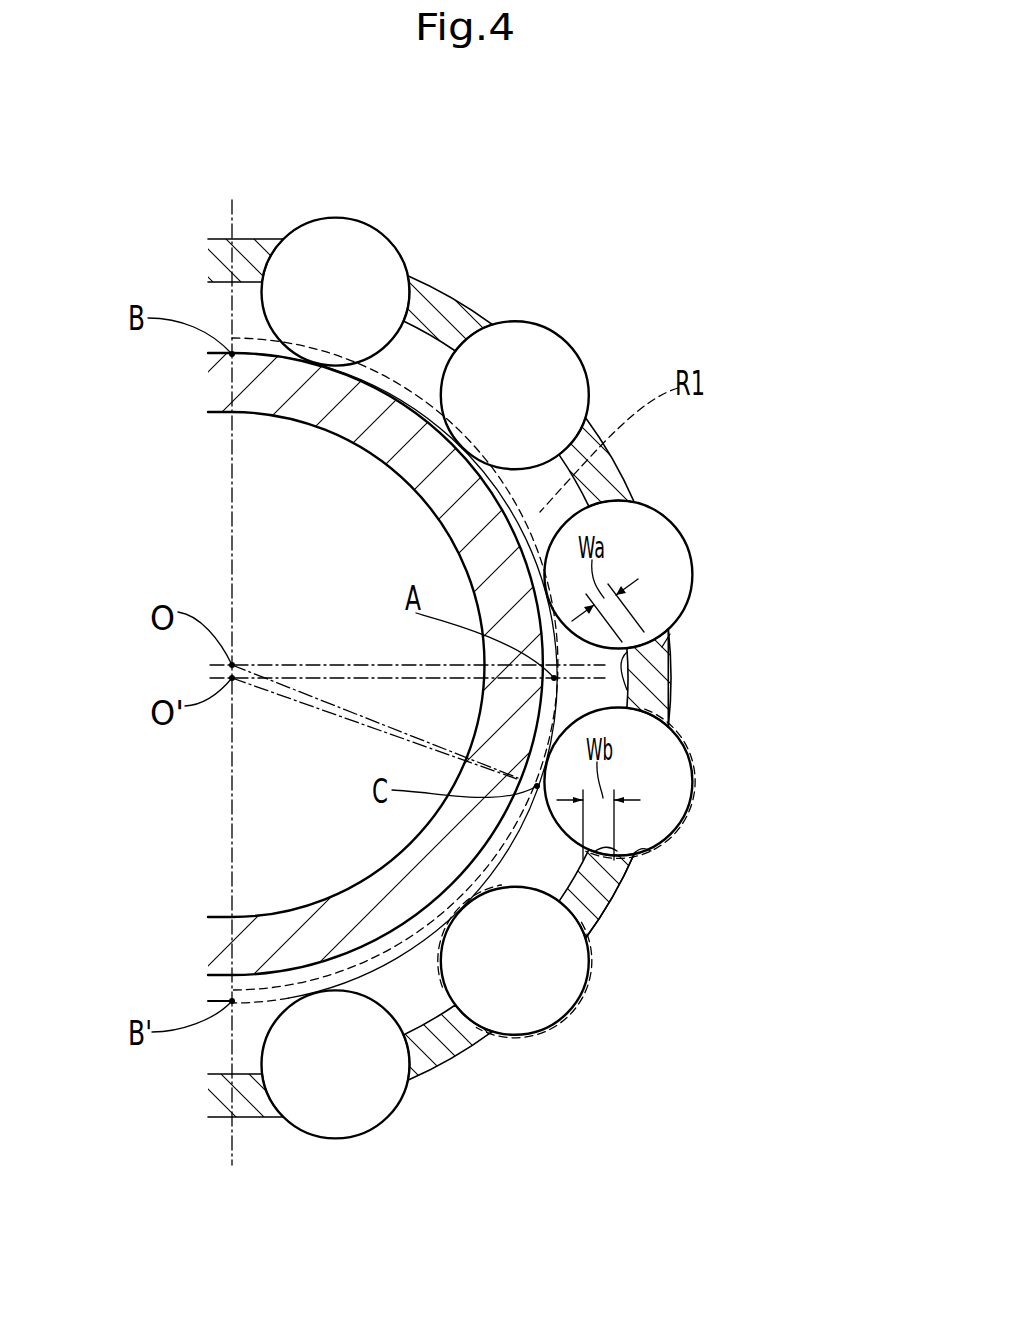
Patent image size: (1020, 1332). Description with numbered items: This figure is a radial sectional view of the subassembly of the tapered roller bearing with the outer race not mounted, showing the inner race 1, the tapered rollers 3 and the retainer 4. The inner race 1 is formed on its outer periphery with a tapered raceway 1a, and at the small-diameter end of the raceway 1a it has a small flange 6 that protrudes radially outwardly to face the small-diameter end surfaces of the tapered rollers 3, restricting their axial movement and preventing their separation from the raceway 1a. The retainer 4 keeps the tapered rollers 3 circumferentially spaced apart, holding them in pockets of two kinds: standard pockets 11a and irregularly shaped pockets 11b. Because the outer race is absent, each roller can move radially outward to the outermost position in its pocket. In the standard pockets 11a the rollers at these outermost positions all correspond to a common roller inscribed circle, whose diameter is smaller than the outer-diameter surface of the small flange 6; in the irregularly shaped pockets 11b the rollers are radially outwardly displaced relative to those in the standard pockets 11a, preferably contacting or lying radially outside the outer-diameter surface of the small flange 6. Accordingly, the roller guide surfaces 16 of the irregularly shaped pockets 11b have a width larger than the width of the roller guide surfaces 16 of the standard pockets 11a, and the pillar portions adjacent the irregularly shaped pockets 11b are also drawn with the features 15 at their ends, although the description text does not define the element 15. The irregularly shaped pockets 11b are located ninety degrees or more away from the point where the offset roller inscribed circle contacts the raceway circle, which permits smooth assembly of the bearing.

The inner race 1 is at (215, 380).
The tapered raceway 1a is at (392, 940).
The tapered roller 3 is at (348, 240).
The retainer 4 is at (215, 262).
The small flange 6 is at (455, 295).
The standard pocket 11a is at (282, 243).
The irregularly shaped pocket 11b is at (670, 727).
The claw 15 is at (670, 640).
The roller guide surface 16 is at (672, 680).